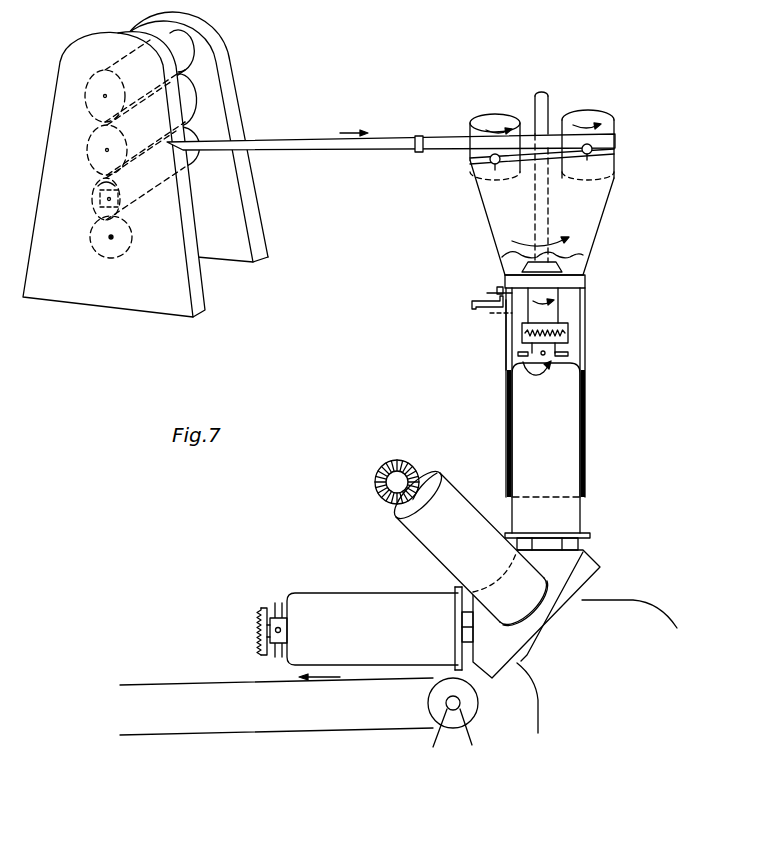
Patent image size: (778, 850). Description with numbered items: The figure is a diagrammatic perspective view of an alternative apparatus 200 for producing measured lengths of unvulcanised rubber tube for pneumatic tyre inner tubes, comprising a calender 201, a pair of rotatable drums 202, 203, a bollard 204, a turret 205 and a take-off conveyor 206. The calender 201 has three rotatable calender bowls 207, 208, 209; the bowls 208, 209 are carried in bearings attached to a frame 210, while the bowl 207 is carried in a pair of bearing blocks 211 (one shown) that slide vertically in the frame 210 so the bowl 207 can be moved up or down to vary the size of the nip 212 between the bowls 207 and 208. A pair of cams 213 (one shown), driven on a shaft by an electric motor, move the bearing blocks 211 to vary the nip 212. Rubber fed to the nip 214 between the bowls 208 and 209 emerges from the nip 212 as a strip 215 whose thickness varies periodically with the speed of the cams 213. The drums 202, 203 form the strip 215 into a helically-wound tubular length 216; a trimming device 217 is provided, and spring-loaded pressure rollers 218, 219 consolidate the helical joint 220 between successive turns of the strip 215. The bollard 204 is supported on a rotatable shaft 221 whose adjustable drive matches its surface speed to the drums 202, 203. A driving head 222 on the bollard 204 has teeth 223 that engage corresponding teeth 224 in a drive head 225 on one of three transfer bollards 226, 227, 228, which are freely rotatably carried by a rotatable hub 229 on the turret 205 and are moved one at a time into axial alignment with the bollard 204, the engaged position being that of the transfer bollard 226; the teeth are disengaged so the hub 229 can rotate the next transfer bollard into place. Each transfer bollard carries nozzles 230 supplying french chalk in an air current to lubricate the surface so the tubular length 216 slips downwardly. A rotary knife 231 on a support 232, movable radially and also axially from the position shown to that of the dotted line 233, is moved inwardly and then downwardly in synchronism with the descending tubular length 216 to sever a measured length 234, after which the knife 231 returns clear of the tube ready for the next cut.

The apparatus 200 is at (617, 119).
The calender 201 is at (235, 81).
The rotatable drum 202 is at (512, 105).
The rotatable drum 203 is at (597, 113).
The bollard 204 is at (587, 277).
The turret 205 is at (597, 561).
The take-off conveyor 206 is at (478, 697).
The calender bowl 207 is at (190, 165).
The calender bowl 208 is at (198, 100).
The calender bowl 209 is at (192, 57).
The frame 210 is at (240, 115).
The bearing block 211 is at (100, 193).
The nip 212 is at (131, 160).
The cam 213 is at (130, 243).
The nip 214 is at (178, 88).
The strip 215 is at (287, 143).
The helically-wound tubular length 216 is at (595, 228).
The trimming device 217 is at (418, 136).
The spring-loaded pressure roller 218 is at (498, 168).
The spring-loaded pressure roller 219 is at (588, 160).
The helical joint 220 is at (592, 148).
The rotatable shaft 221 is at (545, 217).
The driving head 222 is at (568, 322).
The teeth 223 is at (567, 333).
The teeth 224 is at (568, 344).
The drive head 225 is at (547, 354).
The transfer bollard 226 is at (570, 423).
The transfer bollard 227 is at (470, 500).
The transfer bollard 228 is at (388, 600).
The rotatable hub 229 is at (585, 551).
The nozzle 230 is at (282, 603).
The rotary knife 231 is at (496, 290).
The support 232 is at (472, 309).
The dotted line 233 is at (510, 313).
The measured length 234 is at (510, 360).